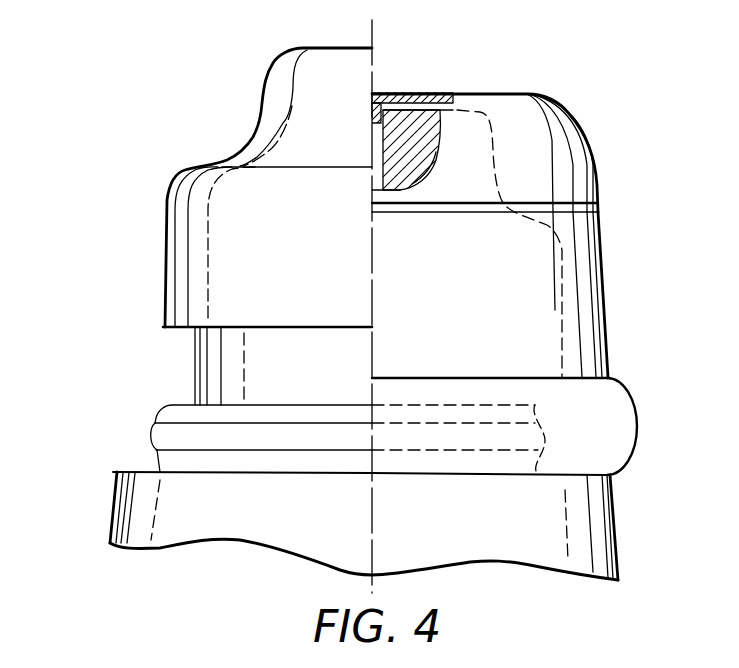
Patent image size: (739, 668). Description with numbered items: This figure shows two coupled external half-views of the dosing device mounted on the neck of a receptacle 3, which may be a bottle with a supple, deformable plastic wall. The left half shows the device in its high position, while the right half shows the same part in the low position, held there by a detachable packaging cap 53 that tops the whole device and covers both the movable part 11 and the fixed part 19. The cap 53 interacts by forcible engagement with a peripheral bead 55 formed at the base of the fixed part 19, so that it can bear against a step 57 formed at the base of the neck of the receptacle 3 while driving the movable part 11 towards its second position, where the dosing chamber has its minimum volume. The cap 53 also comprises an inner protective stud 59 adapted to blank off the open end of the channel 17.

The inner protective stud 59 is at (372, 110).
The channel 17 is at (378, 157).
The detachable packaging cap 53 is at (567, 111).
The movable part 11 is at (566, 321).
The fixed part 19 is at (218, 367).
The peripheral bead 55 is at (158, 433).
The step 57 is at (127, 472).
The receptacle 3 is at (201, 530).